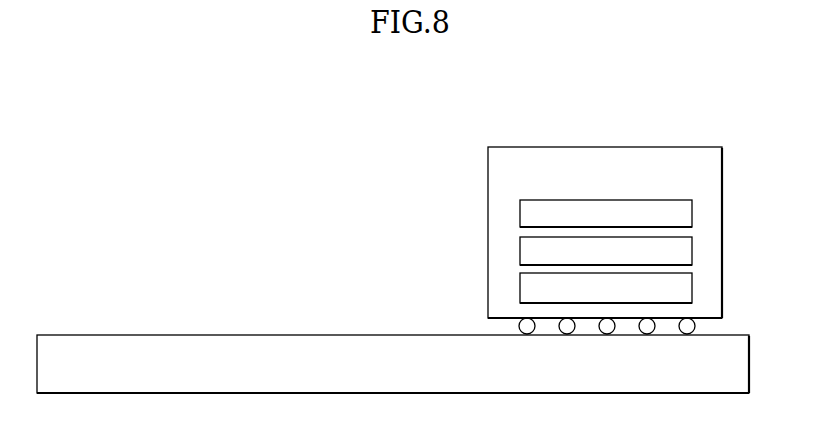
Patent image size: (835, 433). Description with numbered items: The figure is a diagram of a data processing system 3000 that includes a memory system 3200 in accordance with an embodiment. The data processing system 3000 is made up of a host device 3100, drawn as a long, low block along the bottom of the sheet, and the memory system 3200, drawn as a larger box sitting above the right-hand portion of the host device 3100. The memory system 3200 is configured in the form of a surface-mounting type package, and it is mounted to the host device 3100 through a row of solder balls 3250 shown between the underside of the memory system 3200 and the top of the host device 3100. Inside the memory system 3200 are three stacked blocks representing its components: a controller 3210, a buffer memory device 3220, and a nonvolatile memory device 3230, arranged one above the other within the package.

The data processing system 3000 is at (100, 90).
The host device 3100 is at (393, 364).
The memory system 3200 is at (605, 232).
The controller 3210 is at (606, 213).
The buffer memory device 3220 is at (606, 252).
The nonvolatile memory device 3230 is at (606, 289).
The solder balls 3250 is at (705, 325).